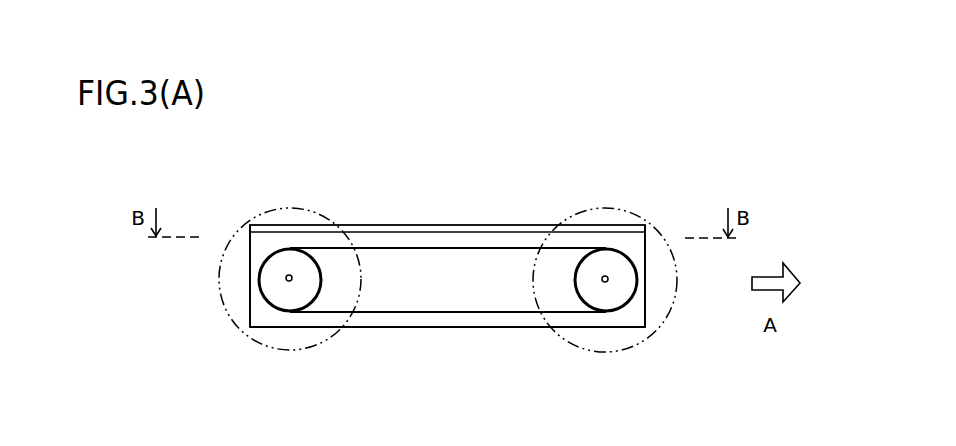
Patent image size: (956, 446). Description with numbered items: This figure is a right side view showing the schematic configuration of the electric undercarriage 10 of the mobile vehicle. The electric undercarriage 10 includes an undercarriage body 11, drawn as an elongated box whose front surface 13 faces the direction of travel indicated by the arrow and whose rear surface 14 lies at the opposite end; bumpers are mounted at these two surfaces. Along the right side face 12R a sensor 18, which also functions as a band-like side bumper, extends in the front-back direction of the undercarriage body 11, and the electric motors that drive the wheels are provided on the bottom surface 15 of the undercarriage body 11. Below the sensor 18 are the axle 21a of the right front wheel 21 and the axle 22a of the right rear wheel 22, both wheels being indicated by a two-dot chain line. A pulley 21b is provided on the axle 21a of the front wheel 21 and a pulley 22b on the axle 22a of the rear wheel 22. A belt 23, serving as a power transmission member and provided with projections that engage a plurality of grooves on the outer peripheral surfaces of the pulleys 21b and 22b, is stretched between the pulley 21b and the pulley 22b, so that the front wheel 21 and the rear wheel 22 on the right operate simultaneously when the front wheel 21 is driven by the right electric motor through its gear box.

The electric undercarriage 10 is at (619, 142).
The undercarriage body 11 is at (383, 220).
The right side face 12R is at (397, 303).
The front surface 13 is at (647, 277).
The rear surface 14 is at (249, 238).
The bottom surface 15 is at (452, 328).
The sensor 18 is at (505, 224).
The front wheel 21 is at (620, 207).
The axle 21a is at (605, 283).
The pulley 21b is at (622, 292).
The rear wheel 22 is at (272, 208).
The axle 22a is at (290, 283).
The pulley 22b is at (268, 275).
The belt 23 is at (437, 248).